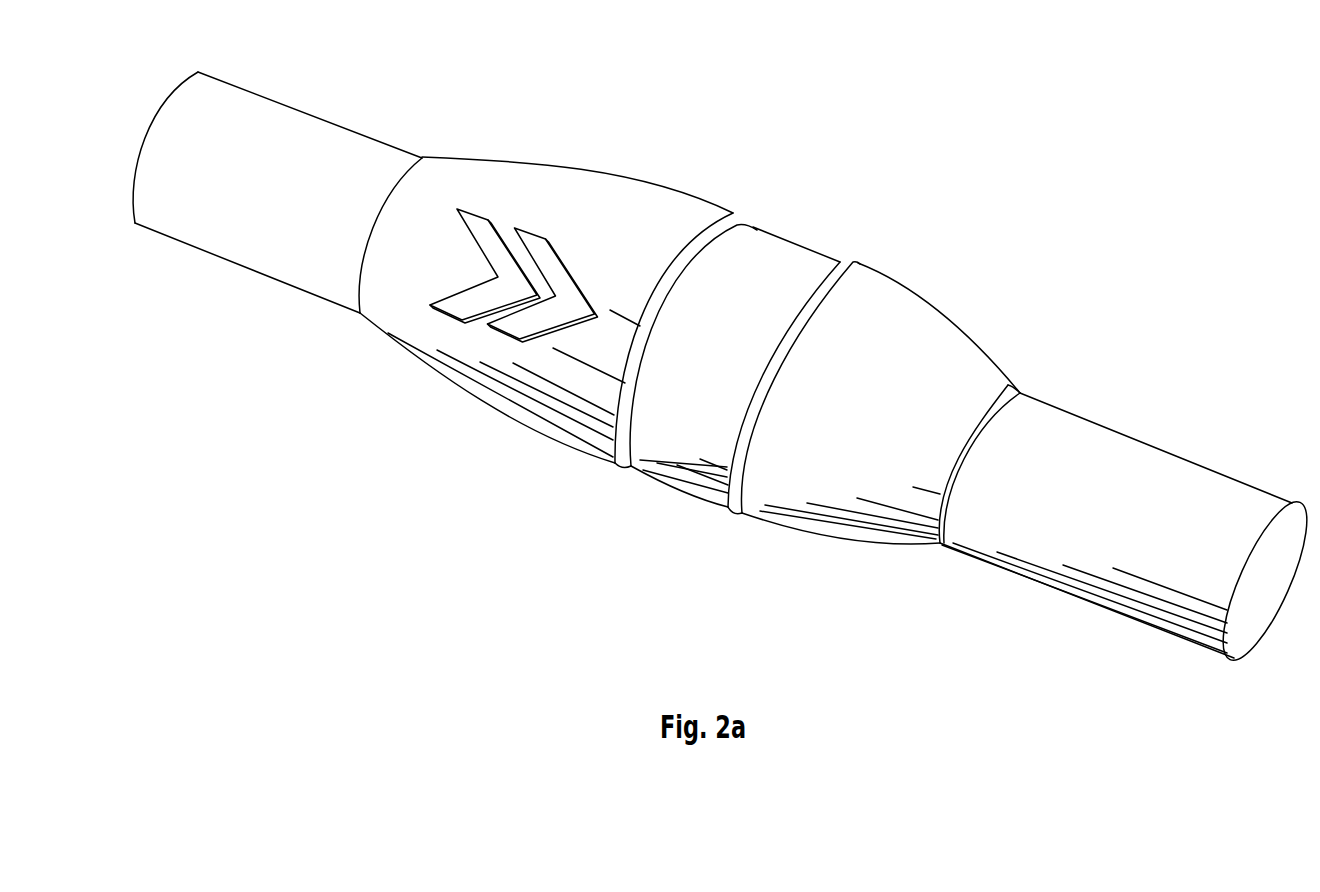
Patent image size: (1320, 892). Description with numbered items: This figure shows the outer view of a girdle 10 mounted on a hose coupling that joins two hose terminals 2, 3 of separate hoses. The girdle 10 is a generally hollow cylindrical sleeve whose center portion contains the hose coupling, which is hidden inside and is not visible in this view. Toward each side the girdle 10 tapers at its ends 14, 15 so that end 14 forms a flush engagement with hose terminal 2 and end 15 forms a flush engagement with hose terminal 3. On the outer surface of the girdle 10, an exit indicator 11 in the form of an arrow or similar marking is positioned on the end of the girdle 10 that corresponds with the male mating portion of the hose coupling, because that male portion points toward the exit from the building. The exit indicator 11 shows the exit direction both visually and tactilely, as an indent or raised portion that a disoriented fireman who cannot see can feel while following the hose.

The hose terminal 2 is at (313, 115).
The hose terminal 3 is at (1150, 445).
The girdle 10 is at (675, 207).
The exit indicator 11 is at (488, 295).
The end 14 is at (460, 158).
The end 15 is at (935, 303).